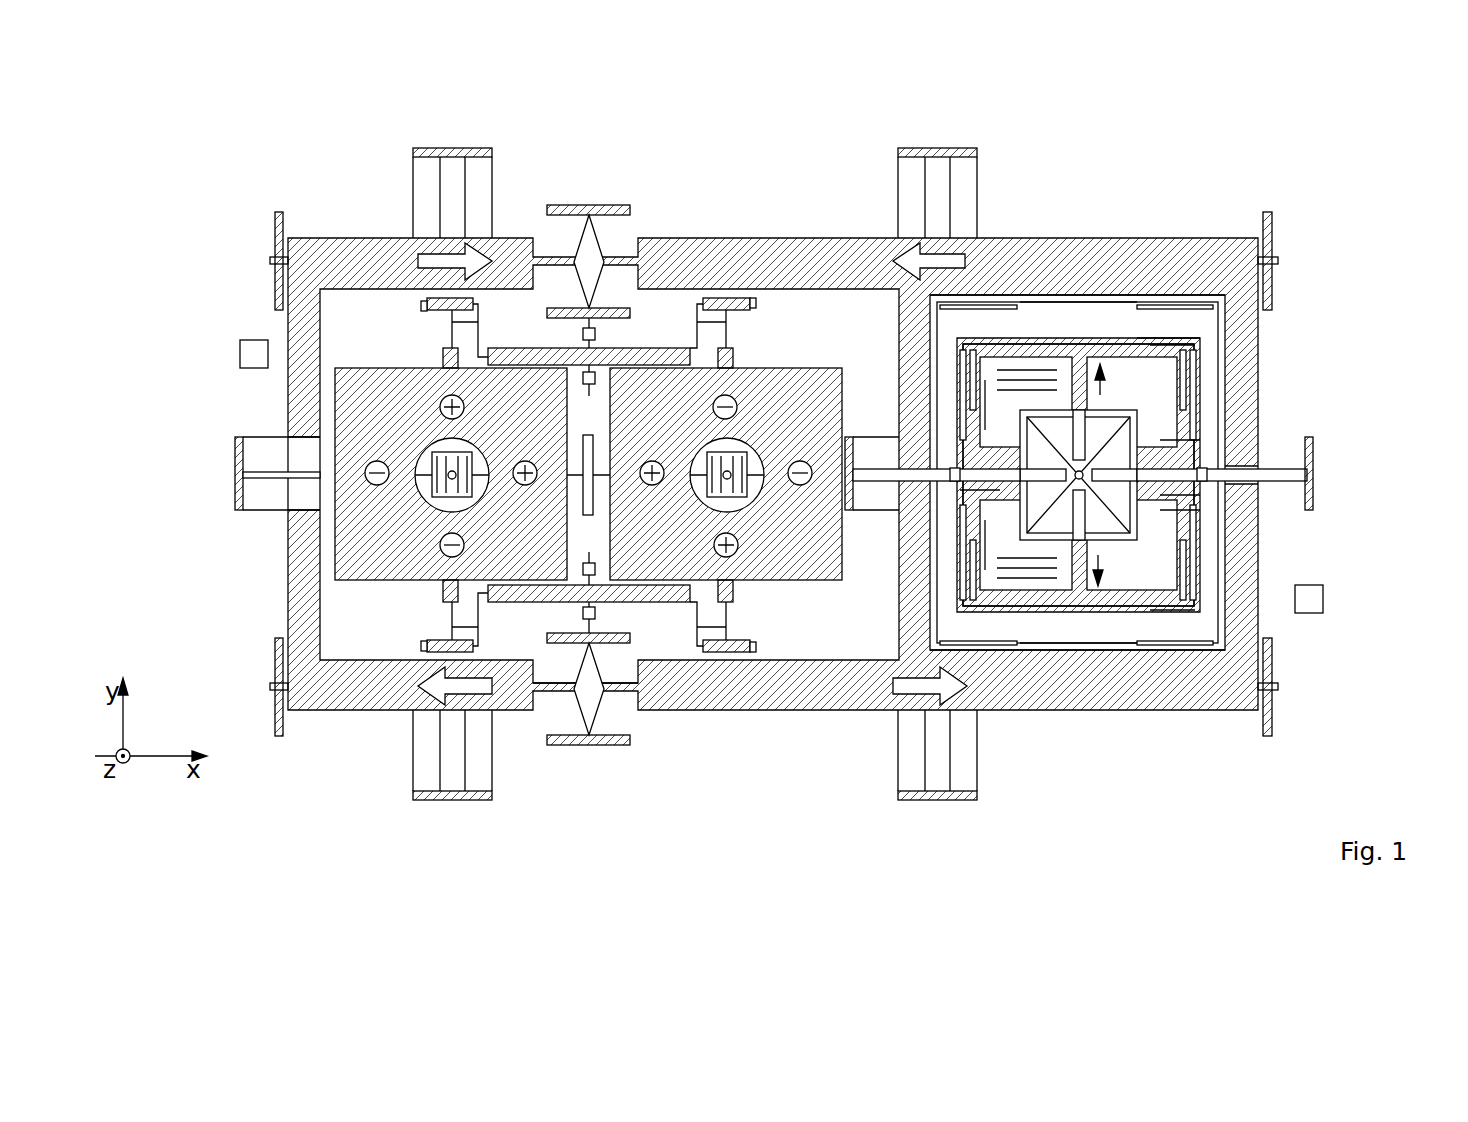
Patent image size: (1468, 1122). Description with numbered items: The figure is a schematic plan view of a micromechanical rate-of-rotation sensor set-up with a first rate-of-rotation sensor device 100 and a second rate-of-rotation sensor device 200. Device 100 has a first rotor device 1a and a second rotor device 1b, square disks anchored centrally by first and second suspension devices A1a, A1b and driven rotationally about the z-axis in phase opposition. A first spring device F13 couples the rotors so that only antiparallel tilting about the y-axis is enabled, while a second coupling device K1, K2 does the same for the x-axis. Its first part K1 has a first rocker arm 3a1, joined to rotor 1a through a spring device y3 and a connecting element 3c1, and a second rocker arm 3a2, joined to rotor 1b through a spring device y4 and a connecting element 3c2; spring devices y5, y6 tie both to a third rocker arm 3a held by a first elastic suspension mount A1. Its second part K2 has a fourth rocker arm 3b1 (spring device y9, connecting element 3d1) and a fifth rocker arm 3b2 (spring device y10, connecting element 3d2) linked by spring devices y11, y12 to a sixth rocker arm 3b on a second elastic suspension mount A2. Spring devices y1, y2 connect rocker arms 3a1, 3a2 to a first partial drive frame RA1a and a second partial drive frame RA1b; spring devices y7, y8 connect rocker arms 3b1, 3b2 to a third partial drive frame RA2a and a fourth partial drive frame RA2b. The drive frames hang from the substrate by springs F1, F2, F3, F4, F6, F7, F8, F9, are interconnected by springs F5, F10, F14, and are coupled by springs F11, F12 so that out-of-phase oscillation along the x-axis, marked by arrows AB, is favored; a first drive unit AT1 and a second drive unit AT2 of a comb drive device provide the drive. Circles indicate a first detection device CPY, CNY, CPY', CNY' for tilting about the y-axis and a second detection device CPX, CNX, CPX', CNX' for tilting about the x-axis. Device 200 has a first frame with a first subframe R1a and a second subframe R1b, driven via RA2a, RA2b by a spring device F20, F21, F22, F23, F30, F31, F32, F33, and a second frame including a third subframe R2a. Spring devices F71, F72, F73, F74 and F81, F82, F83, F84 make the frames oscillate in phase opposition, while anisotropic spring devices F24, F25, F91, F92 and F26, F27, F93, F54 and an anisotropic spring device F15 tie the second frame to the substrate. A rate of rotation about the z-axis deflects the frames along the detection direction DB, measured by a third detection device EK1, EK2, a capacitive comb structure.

The first rate-of-rotation sensor device 100 is at (640, 162).
The second rate-of-rotation sensor device 200 is at (1086, 162).
The first rotor device 1a is at (365, 584).
The second rotor device 1b is at (770, 584).
The third rocker arm 3a is at (622, 356).
The sixth rocker arm 3b is at (648, 603).
The first rocker arm 3a1 is at (440, 300).
The second rocker arm 3a2 is at (735, 298).
The fourth rocker arm 3b1 is at (440, 650).
The fifth rocker arm 3b2 is at (735, 652).
The connecting element 3c1 is at (443, 358).
The connecting element 3c2 is at (725, 350).
The connecting element 3d1 is at (443, 592).
The connecting element 3d2 is at (724, 602).
The ninth spring device y1 is at (422, 306).
The tenth spring device y2 is at (752, 300).
The first spring device y3 is at (462, 322).
The second spring device y4 is at (730, 322).
The third spring device y5 is at (479, 340).
The fourth spring device y6 is at (700, 304).
The eleventh spring device y7 is at (422, 646).
The twelfth spring device y8 is at (752, 650).
The fifth spring device y9 is at (462, 627).
The sixth spring device y10 is at (730, 627).
The seventh spring device y11 is at (479, 610).
The eighth spring device y12 is at (700, 646).
The first elastic suspension mount A1 is at (586, 330).
The second elastic suspension mount A2 is at (586, 640).
The first suspension device A1a is at (440, 490).
The second suspension device A1b is at (745, 488).
The direction of driving motion AB is at (478, 262).
The first drive unit AT1 is at (240, 352).
The second drive unit AT2 is at (1323, 600).
The first part of second coupling device K1 is at (594, 272).
The second part of second coupling device K2 is at (596, 688).
The first partial drive frame RA1a is at (335, 262).
The second partial drive frame RA1b is at (342, 693).
The third partial drive frame RA2a is at (1075, 282).
The fourth partial drive frame RA2b is at (1075, 682).
The first subframe R1a is at (1122, 330).
The second subframe R1b is at (1125, 630).
The third subframe R2a is at (1165, 345).
The first detection device electrode CNY is at (483, 407).
The second detection device electrode CPX is at (375, 459).
The second detection device electrode CNX is at (523, 459).
The first detection device electrode CPY is at (481, 545).
The first detection device electrode CNY' is at (759, 407).
The second detection device electrode CPX' is at (648, 459).
The second detection device electrode CNX' is at (798, 459).
The first detection device electrode CPY' is at (691, 545).
The direction of detection motion DB is at (1104, 392).
The third detection device EK1 is at (1025, 380).
The third detection device EK2 is at (1022, 570).
The spring F1 is at (453, 148).
The spring F2 is at (272, 260).
The spring F3 is at (453, 800).
The spring F4 is at (272, 688).
The spring F5 is at (235, 475).
The spring F6 is at (937, 148).
The spring F7 is at (1278, 260).
The spring F8 is at (937, 800).
The spring F9 is at (1278, 688).
The spring F10 is at (1313, 474).
The spring F11 is at (590, 205).
The spring F12 is at (590, 745).
The first spring device F13 is at (596, 508).
The spring F14 is at (849, 452).
The anisotropic spring device F15 is at (1120, 440).
The spring device F20 is at (985, 345).
The spring device F21 is at (1178, 306).
The spring device F22 is at (988, 650).
The spring device F23 is at (1180, 648).
The anisotropic spring device F24 is at (960, 345).
The anisotropic spring device F25 is at (1195, 346).
The anisotropic spring device F26 is at (990, 624).
The anisotropic spring device F27 is at (1180, 612).
The spring device F30 is at (952, 470).
The spring device F31 is at (1210, 474).
The spring device F32 is at (965, 500).
The spring device F33 is at (1200, 492).
The anisotropic spring device F54 is at (1195, 508).
The spring device F71 is at (962, 366).
The spring device F72 is at (1192, 376).
The spring device F73 is at (974, 395).
The spring device F74 is at (1180, 434).
The spring device F81 is at (978, 546).
The spring device F82 is at (1188, 524).
The spring device F83 is at (985, 598).
The spring device F84 is at (1190, 562).
The anisotropic spring device F91 is at (988, 430).
The anisotropic spring device F92 is at (1200, 452).
The anisotropic spring device F93 is at (985, 520).